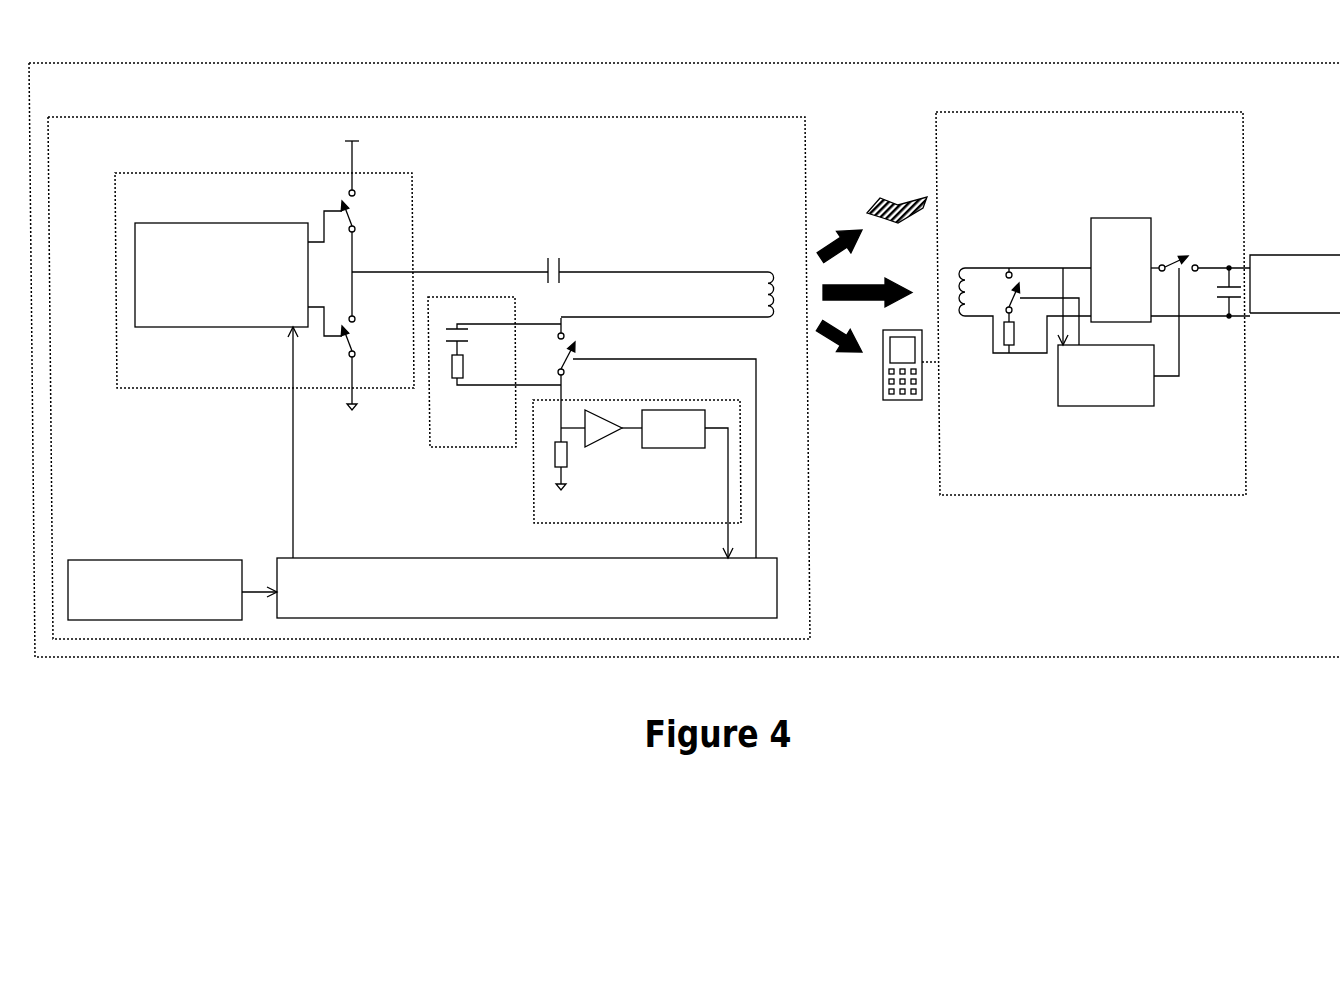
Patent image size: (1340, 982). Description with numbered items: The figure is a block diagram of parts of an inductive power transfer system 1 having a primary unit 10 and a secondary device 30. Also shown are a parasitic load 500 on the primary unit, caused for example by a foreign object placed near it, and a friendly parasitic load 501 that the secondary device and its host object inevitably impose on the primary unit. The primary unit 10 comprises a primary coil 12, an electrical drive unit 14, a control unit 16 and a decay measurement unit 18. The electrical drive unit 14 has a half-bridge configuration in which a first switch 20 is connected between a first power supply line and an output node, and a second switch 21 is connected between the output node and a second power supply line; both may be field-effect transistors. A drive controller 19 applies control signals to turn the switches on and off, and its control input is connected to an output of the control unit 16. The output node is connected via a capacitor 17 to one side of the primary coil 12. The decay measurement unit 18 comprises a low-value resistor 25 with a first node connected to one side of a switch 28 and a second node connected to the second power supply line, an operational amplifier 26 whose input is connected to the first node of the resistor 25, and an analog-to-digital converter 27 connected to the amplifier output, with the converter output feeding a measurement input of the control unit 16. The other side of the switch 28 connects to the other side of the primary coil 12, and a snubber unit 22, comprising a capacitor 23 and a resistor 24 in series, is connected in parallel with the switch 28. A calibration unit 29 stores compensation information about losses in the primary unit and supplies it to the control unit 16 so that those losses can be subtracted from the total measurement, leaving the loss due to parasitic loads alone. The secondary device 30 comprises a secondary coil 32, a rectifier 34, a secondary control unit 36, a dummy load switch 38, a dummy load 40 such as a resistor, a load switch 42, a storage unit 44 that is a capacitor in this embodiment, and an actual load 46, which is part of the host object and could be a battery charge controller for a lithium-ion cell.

The inductive power transfer system 1 is at (80, 62).
The primary unit 10 is at (205, 116).
The primary coil 12 is at (666, 294).
The electrical drive unit 14 is at (240, 172).
The control unit 16 is at (277, 566).
The capacitor 17 is at (460, 254).
The decay measurement unit 18 is at (532, 505).
The drive controller 19 is at (200, 225).
The first switch 20 is at (345, 206).
The second switch 21 is at (345, 341).
The snubber unit 22 is at (428, 447).
The capacitor 23 is at (503, 339).
The resistor 24 is at (506, 368).
The resistor 25 is at (574, 459).
The operational amplifier 26 is at (601, 436).
The analog-to-digital converter 27 is at (687, 484).
The switch 28 is at (657, 438).
The calibration unit 29 is at (190, 562).
The secondary device 30 is at (980, 112).
The secondary coil 32 is at (1025, 310).
The rectifier 34 is at (1112, 218).
The secondary control unit 36 is at (1055, 403).
The dummy load switch 38 is at (1039, 292).
The dummy load 40 is at (1022, 333).
The load switch 42 is at (1200, 247).
The storage unit 44 is at (1200, 292).
The actual load 46 is at (1322, 255).
The parasitic load 500 is at (900, 197).
The friendly parasitic load 501 is at (902, 402).